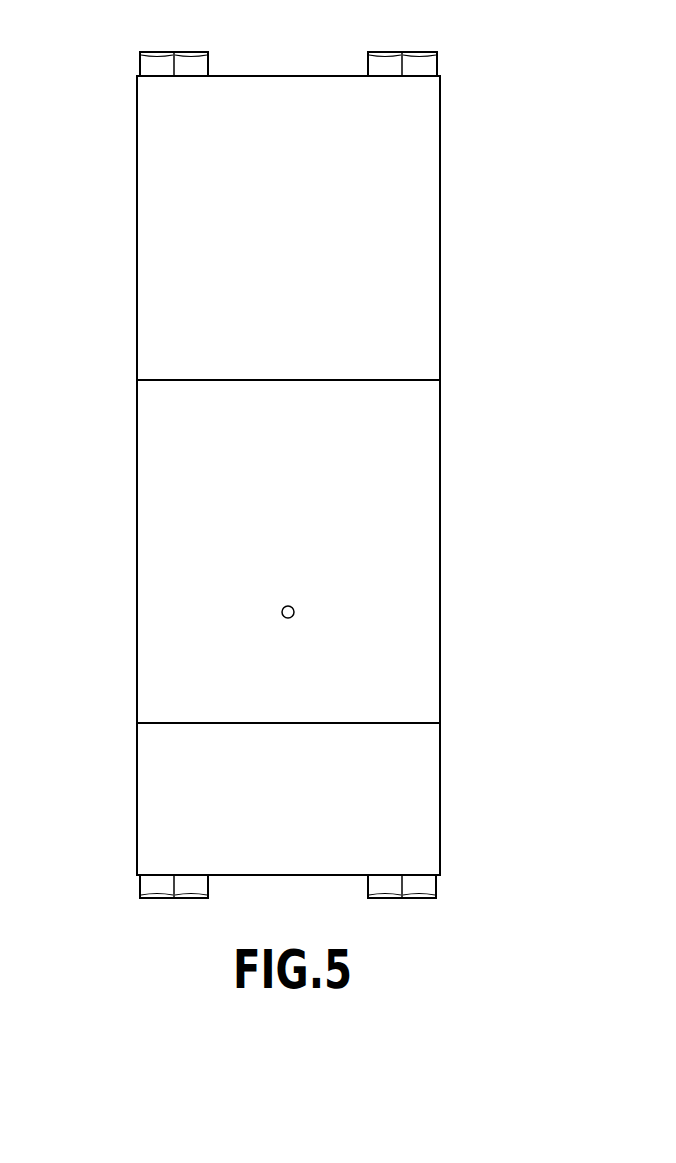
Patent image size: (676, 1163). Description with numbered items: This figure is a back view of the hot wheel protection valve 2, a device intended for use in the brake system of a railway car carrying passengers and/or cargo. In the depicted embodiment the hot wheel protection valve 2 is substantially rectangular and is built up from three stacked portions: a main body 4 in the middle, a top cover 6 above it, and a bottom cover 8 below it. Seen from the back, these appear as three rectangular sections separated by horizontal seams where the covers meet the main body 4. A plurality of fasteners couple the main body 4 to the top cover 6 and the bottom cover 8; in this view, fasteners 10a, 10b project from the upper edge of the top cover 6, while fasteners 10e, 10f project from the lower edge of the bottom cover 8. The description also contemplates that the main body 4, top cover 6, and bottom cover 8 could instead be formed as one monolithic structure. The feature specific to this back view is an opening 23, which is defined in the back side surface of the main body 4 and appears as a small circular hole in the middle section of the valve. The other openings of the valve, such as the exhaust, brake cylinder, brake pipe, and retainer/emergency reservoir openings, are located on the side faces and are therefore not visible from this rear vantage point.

The hot wheel protection valve 2 is at (477, 325).
The main body 4 is at (423, 520).
The top cover 6 is at (426, 196).
The bottom cover 8 is at (430, 783).
The fastener 10a is at (417, 60).
The fastener 10b is at (185, 60).
The fastener 10e is at (423, 888).
The fastener 10f is at (153, 887).
The opening 23 is at (280, 615).